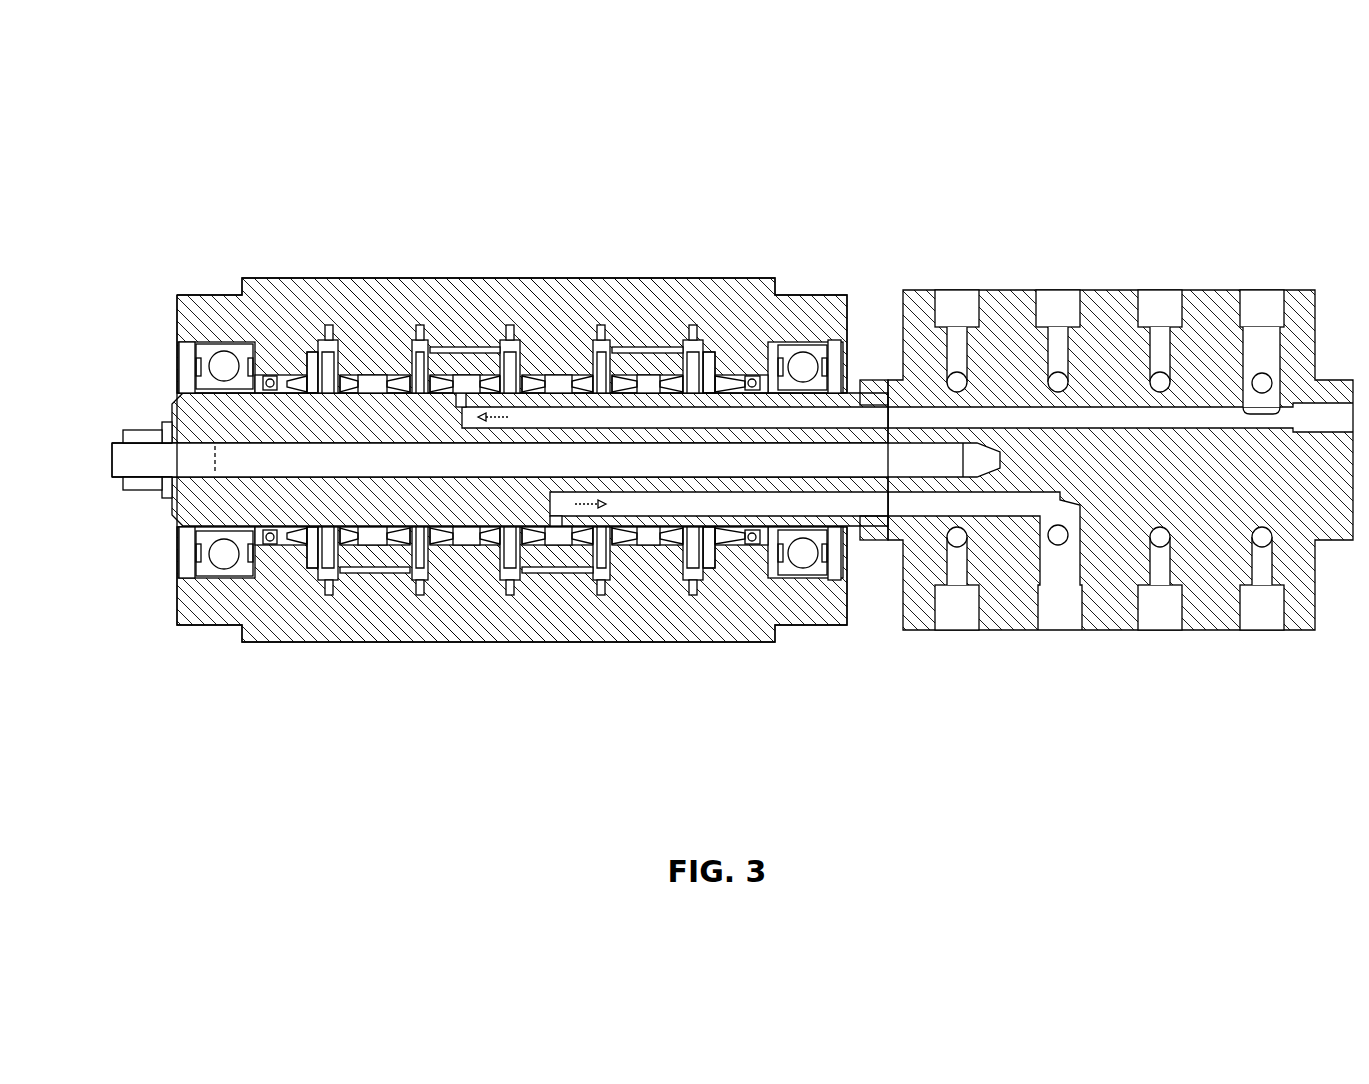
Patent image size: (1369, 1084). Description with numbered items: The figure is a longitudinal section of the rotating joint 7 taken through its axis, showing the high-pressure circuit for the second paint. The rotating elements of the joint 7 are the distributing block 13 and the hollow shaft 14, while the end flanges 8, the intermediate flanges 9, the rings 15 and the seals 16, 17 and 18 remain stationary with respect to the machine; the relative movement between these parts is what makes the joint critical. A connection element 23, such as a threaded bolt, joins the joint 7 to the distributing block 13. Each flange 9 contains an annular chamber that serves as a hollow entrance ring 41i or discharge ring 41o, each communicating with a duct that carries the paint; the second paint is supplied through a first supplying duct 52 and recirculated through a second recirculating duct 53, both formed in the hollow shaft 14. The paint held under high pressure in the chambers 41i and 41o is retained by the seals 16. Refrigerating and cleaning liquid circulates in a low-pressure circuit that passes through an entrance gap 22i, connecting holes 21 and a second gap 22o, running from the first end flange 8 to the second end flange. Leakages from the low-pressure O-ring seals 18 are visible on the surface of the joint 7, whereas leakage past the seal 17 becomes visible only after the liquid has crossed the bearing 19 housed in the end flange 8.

The rotating joint 7 is at (247, 207).
The end flange 8 is at (210, 605).
The flange 9 is at (378, 600).
The distributing block 13 is at (1113, 590).
The shaft 14 is at (197, 420).
The ring 15 is at (312, 372).
The seal 16 is at (345, 345).
The seal 17 is at (266, 376).
The low-pressure seal 18 is at (330, 325).
The bearing 19 is at (223, 366).
The connecting hole 21 is at (643, 347).
The discharge gap 22o is at (313, 562).
The entrance gap 22i is at (707, 540).
The connection element 23 is at (143, 460).
The discharge ring 41o is at (377, 540).
The entrance ring 41i is at (560, 540).
The first supplying duct 52 is at (860, 502).
The second recirculating duct 53 is at (840, 408).